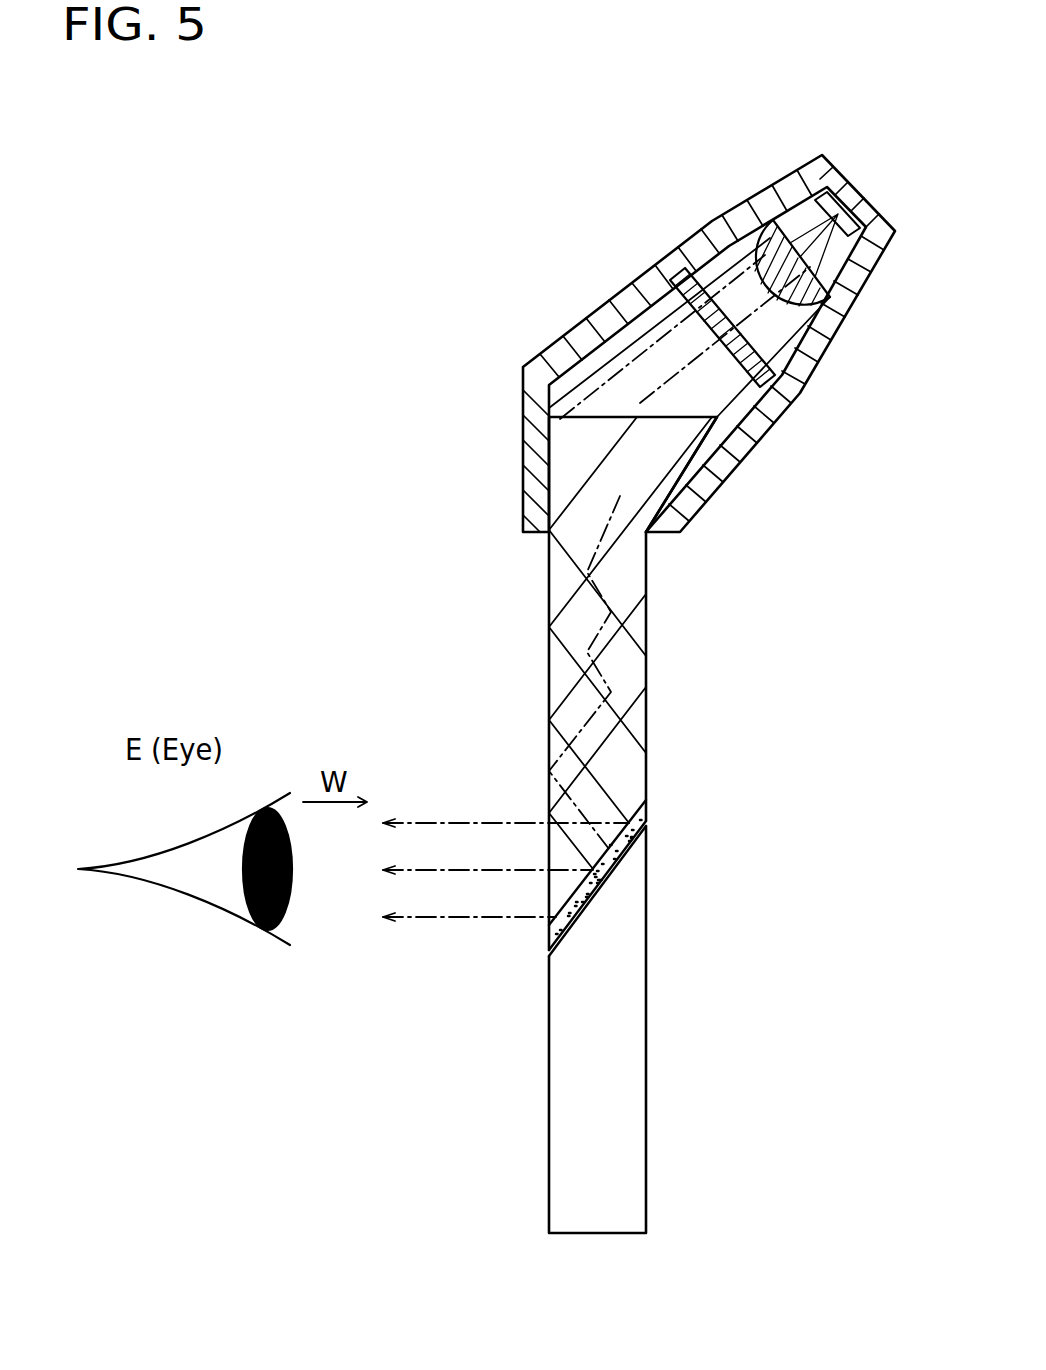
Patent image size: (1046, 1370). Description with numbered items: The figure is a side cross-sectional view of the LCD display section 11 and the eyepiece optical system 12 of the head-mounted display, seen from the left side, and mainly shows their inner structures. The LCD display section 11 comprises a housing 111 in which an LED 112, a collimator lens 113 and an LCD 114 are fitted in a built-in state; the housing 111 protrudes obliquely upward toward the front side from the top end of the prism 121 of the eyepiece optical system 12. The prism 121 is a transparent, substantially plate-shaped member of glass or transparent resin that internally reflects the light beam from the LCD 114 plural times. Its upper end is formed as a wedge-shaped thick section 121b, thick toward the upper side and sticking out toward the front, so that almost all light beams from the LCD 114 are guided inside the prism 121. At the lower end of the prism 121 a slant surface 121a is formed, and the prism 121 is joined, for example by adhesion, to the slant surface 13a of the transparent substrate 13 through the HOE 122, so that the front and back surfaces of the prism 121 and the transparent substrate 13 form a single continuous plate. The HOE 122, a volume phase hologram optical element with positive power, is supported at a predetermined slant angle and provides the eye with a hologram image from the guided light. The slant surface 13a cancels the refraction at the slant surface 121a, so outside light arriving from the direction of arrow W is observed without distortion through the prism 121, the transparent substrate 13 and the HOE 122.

The LCD display section 11 is at (709, 290).
The housing 111 is at (642, 280).
The LED 112 is at (830, 195).
The collimator lens 113 is at (760, 232).
The LCD 114 is at (692, 270).
The eyepiece optical system 12 is at (703, 683).
The prism 121 is at (623, 684).
The slant surface 121a is at (668, 885).
The thick section 121b is at (663, 450).
The HOE 122 is at (622, 846).
The transparent substrate 13 is at (658, 1029).
The slant surface 13a is at (577, 922).